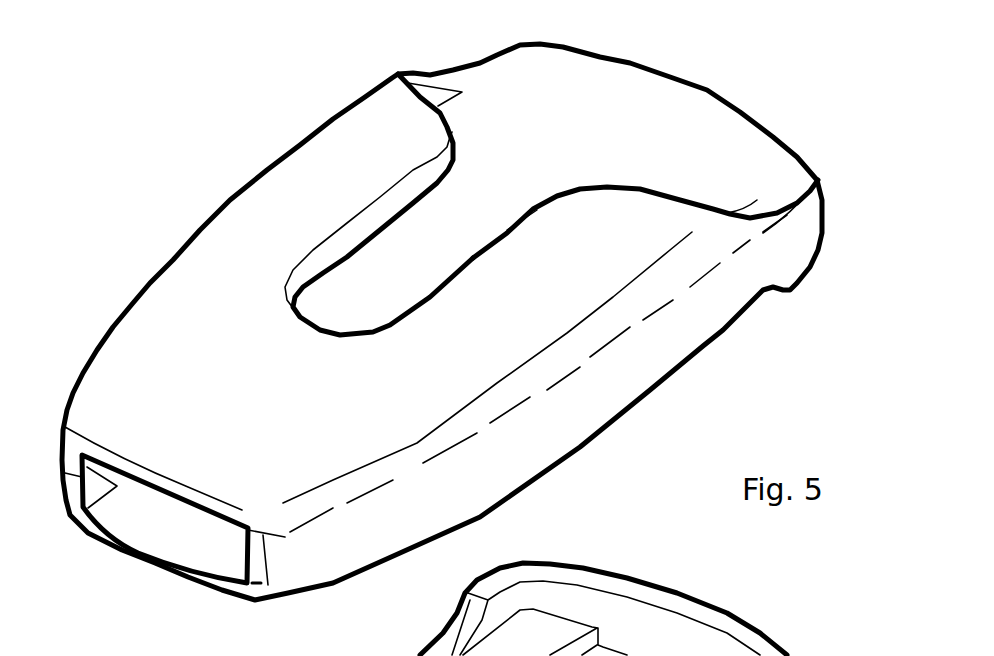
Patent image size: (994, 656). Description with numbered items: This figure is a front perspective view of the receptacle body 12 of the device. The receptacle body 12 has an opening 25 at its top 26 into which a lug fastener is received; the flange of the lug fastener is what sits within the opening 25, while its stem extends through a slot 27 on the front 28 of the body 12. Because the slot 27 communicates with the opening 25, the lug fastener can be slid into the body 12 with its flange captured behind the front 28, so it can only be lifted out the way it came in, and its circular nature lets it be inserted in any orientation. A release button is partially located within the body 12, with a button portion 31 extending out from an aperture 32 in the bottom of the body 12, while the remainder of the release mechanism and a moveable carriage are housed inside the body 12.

The receptacle body 12 is at (723, 337).
The opening 25 is at (580, 92).
The top 26 is at (760, 118).
The slot 27 is at (350, 268).
The front 28 is at (323, 150).
The button portion 31 is at (188, 587).
The aperture 32 is at (145, 532).